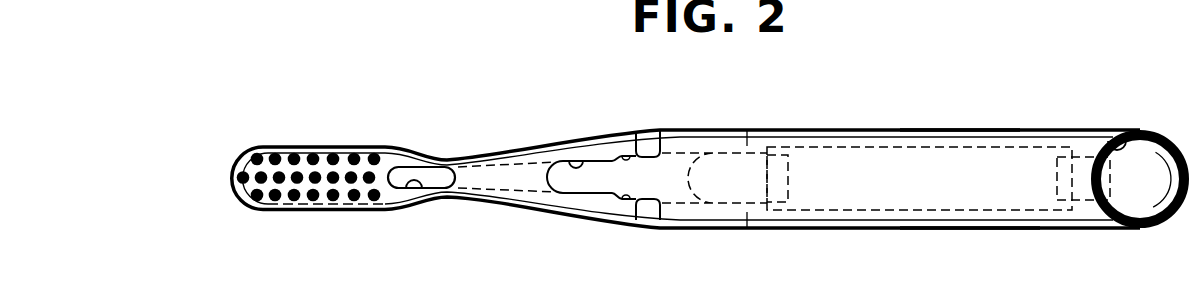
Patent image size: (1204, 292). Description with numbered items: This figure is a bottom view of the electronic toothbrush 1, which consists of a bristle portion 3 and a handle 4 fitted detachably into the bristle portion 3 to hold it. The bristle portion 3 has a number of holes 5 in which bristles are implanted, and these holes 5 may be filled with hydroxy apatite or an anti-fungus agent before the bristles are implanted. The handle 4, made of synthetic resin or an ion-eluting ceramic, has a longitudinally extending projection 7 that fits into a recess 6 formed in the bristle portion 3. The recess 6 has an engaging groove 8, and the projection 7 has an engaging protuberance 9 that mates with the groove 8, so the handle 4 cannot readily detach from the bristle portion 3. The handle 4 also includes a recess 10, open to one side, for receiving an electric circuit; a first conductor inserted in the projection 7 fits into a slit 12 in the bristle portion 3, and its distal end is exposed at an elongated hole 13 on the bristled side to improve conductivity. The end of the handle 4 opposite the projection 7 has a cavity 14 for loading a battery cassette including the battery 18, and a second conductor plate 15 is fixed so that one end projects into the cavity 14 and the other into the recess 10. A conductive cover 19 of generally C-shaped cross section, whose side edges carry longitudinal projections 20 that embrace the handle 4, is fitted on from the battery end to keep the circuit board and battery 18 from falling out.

The electronic toothbrush 1 is at (913, 110).
The bristle portion 3 is at (360, 145).
The handle 4 is at (690, 132).
The holes 5 is at (257, 157).
The recess 6 is at (582, 165).
The projection 7 is at (600, 185).
The engaging groove 8 is at (634, 156).
The engaging protuberance 9 is at (642, 200).
The recess 10 is at (1003, 157).
The slit 12 is at (437, 175).
The hole 13 is at (423, 190).
The cavity 14 is at (1113, 152).
The second conductor plate 15 is at (1087, 157).
The battery 18 is at (1148, 163).
The cover 19 is at (1050, 128).
The longitudinal projections 20 is at (958, 128).